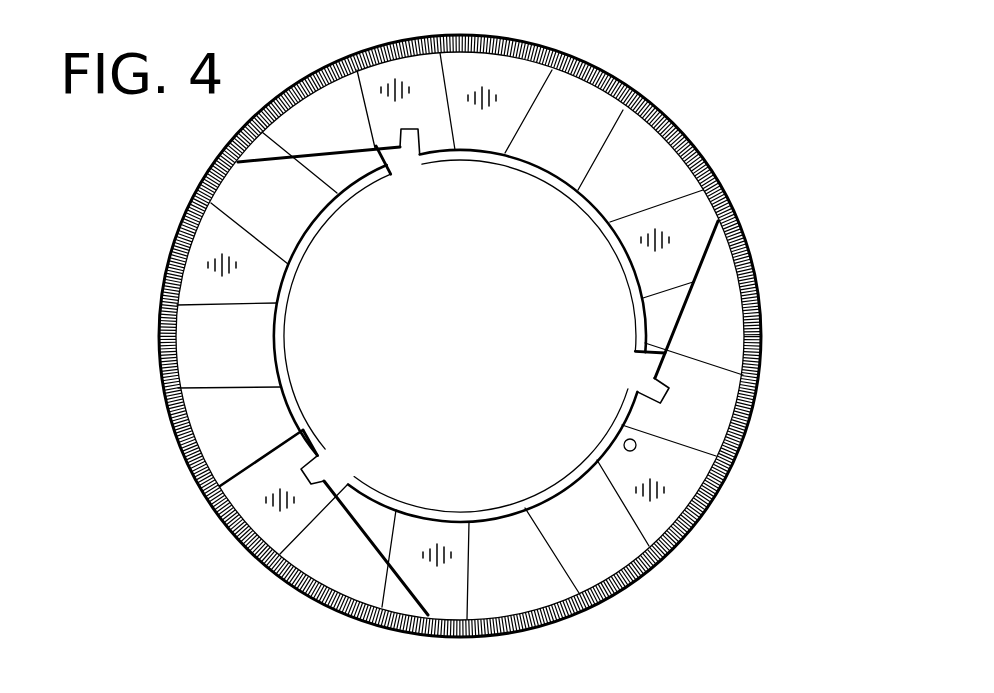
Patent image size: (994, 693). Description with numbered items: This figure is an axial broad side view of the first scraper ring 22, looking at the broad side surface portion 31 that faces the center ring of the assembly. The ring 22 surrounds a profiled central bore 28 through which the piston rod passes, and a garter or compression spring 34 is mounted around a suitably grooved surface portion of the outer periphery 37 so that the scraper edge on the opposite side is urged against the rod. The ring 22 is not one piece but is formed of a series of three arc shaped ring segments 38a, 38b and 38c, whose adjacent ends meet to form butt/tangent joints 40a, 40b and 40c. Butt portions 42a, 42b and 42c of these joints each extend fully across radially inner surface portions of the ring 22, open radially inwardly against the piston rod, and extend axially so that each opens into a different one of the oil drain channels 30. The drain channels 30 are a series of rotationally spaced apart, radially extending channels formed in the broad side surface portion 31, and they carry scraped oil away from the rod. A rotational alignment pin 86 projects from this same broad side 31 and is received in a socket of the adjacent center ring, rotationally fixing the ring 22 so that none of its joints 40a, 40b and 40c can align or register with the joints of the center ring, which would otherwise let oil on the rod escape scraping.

The first scraper ring 22 is at (723, 121).
The profiled central bore 28 is at (590, 221).
The oil drain channels 30 is at (190, 342).
The broad side surface portion 31 is at (648, 153).
The garter spring 34 is at (745, 265).
The outer periphery 37 is at (332, 66).
The arc shaped ring segment 38a is at (617, 225).
The arc shaped ring segment 38b is at (462, 518).
The arc shaped ring segment 38c is at (282, 176).
The butt/tangent joint 40a is at (650, 362).
The butt/tangent joint 40b is at (367, 538).
The butt/tangent joint 40c is at (395, 160).
The butt portion 42a is at (632, 386).
The butt portion 42b is at (322, 450).
The butt portion 42c is at (413, 148).
The rotational alignment pin 86 is at (637, 446).